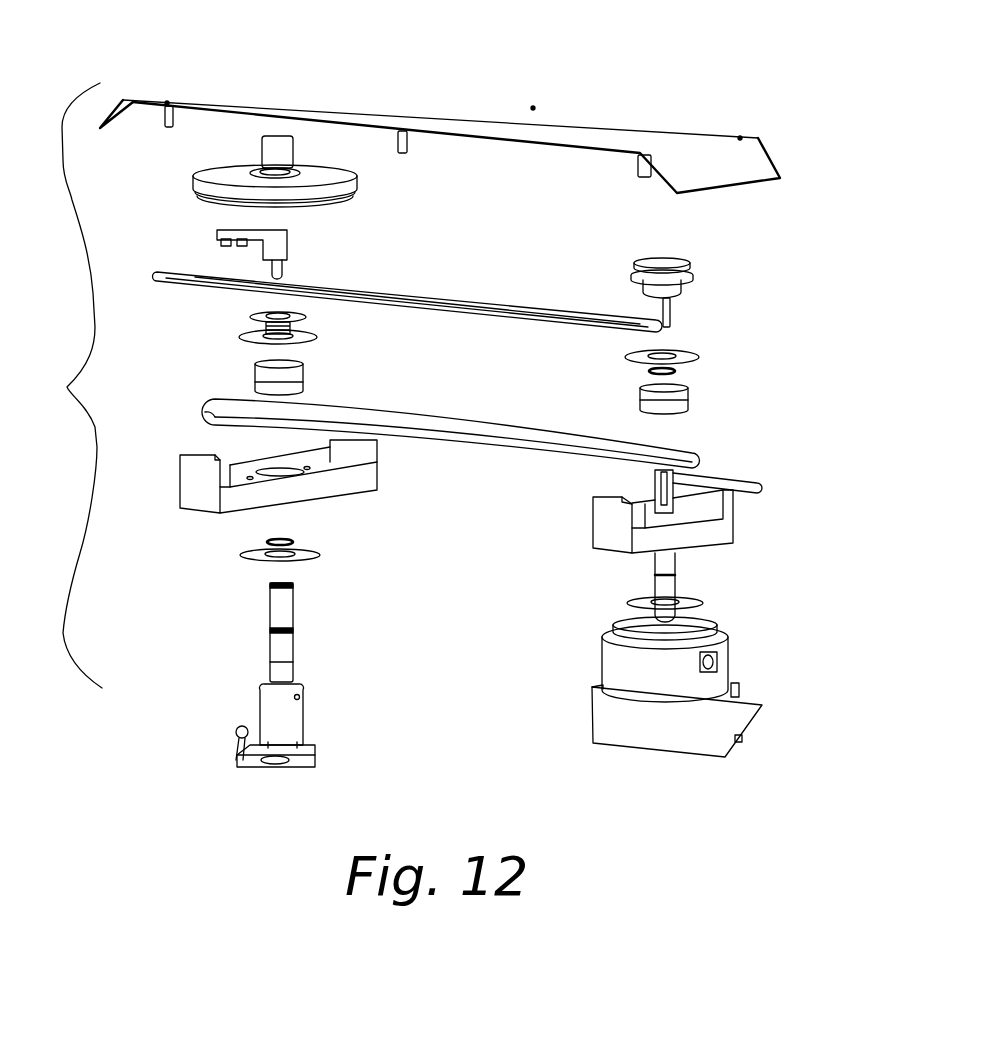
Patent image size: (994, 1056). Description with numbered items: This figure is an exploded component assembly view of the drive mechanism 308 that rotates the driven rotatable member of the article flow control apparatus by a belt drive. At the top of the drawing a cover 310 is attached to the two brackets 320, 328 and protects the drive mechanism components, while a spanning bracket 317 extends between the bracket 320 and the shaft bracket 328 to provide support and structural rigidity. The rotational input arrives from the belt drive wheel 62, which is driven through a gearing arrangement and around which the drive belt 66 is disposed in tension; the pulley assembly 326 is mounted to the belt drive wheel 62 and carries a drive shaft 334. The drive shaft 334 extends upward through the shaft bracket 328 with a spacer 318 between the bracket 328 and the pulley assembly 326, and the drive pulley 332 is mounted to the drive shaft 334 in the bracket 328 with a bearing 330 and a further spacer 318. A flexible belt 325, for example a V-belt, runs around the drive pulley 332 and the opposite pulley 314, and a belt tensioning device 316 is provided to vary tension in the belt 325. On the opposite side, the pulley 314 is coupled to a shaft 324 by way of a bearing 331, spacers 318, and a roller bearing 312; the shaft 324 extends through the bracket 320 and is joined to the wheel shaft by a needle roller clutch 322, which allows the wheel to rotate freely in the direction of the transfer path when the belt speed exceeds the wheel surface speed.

The drive mechanism 308 is at (190, 374).
The cover 310 is at (442, 108).
The roller bearing 312 is at (280, 150).
The pulley 314 is at (340, 163).
The belt tensioning device 316 is at (273, 247).
The spanning bracket 317 is at (422, 283).
The spacer 318 is at (297, 312).
The bracket 320 is at (205, 502).
The needle roller clutch 322 is at (292, 723).
The shaft 324 is at (285, 642).
The flexible belt 325 is at (417, 440).
The pulley assembly 326 is at (718, 643).
The shaft bracket 328 is at (717, 532).
The bearing 330 is at (690, 400).
The bearing 331 is at (303, 382).
The drive pulley 332 is at (683, 260).
The drive shaft 334 is at (667, 585).
The belt drive wheel 62 is at (732, 697).
The drive belt 66 is at (672, 737).